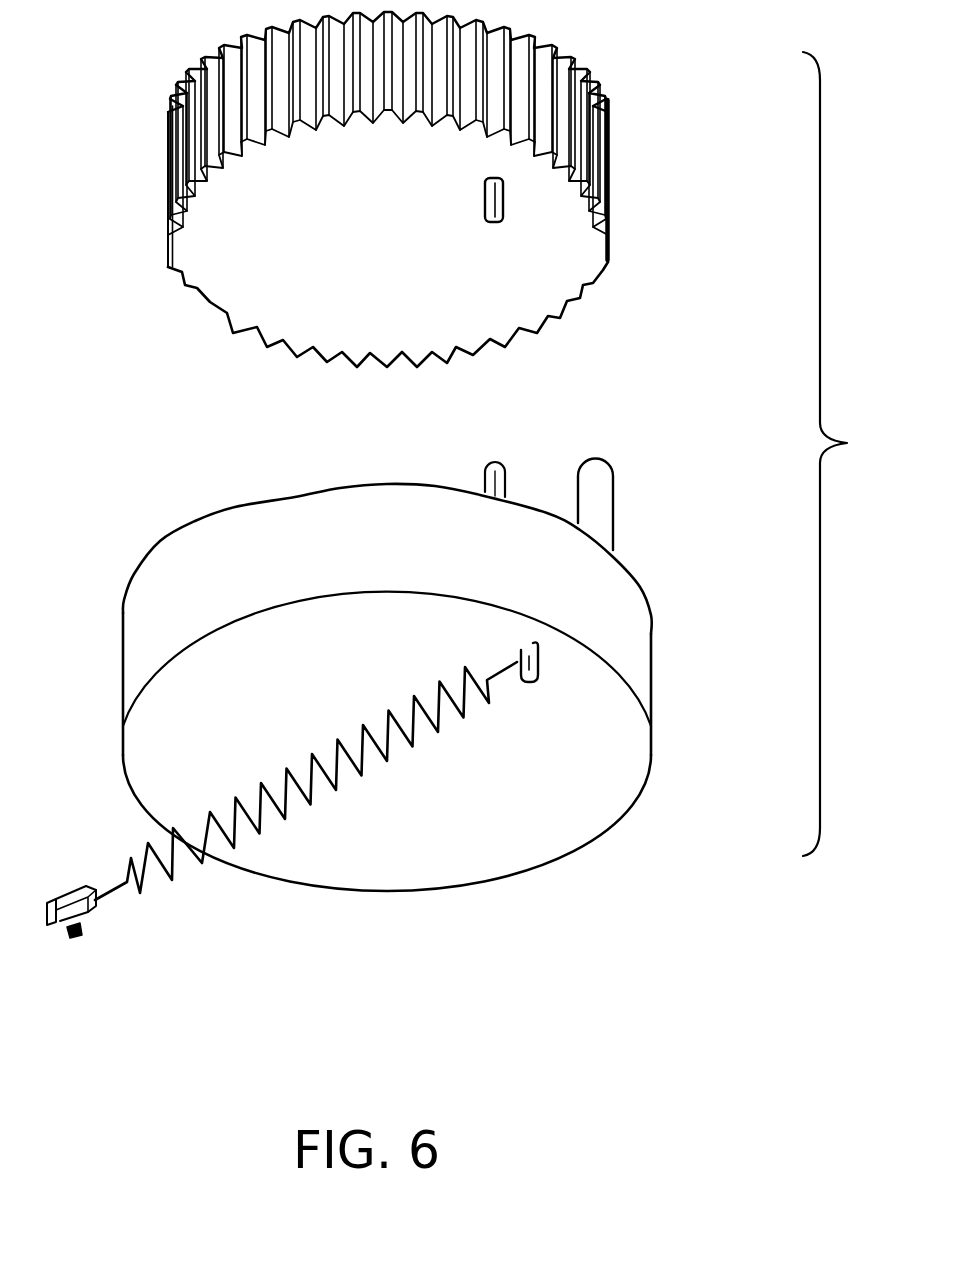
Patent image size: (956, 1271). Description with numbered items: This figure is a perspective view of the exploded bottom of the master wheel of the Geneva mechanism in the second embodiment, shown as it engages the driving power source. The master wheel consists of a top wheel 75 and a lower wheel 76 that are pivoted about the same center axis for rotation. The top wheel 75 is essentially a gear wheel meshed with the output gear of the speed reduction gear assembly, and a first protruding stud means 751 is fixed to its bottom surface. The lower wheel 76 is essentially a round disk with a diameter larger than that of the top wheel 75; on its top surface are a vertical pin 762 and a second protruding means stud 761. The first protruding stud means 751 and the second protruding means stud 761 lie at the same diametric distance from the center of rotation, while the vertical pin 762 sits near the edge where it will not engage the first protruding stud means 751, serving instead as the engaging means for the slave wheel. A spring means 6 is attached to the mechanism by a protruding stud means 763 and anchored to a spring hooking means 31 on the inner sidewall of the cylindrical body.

The top wheel 75 is at (307, 290).
The first protruding stud means 751 is at (506, 193).
The lower wheel 76 is at (555, 775).
The second protruding means stud 761 is at (505, 468).
The vertical pin 762 is at (598, 523).
The protruding stud means 763 is at (538, 653).
The spring means 6 is at (355, 773).
The spring hooking means 31 is at (95, 922).